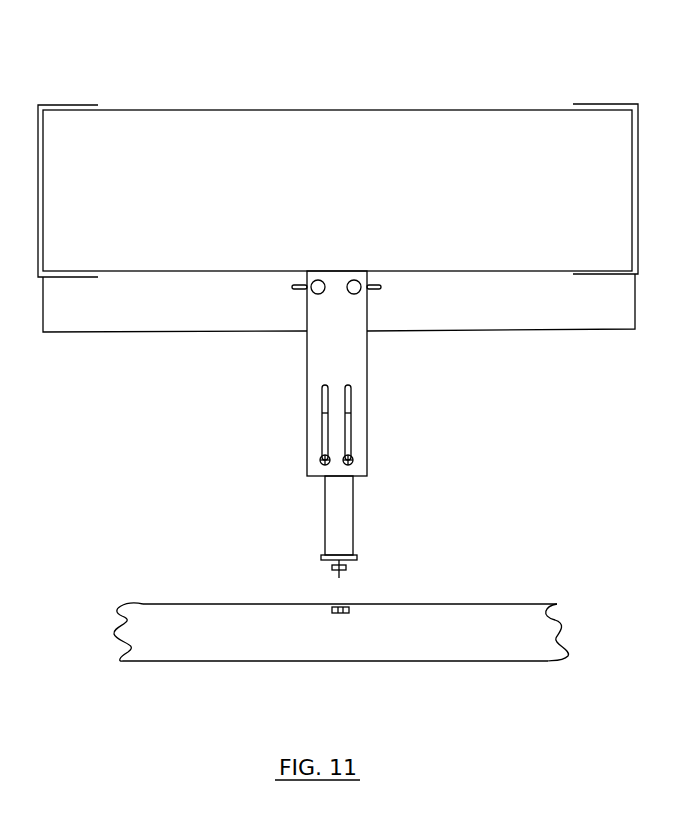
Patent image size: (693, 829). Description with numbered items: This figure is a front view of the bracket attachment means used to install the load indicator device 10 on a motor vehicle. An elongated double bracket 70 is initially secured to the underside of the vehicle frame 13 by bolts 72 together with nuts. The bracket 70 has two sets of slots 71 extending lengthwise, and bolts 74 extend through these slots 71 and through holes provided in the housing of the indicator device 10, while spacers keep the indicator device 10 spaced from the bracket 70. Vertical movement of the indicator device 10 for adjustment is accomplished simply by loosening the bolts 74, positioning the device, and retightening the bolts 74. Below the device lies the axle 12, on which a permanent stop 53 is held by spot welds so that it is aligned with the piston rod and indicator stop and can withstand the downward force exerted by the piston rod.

The frame 13 is at (209, 135).
The elongated double bracket 70 is at (340, 365).
The bolts 72 is at (352, 280).
The slots 71 is at (322, 426).
The bolts 74 is at (320, 458).
The load indicator device 10 is at (322, 520).
The axle 12 is at (418, 633).
The permanent stop 53 is at (332, 615).